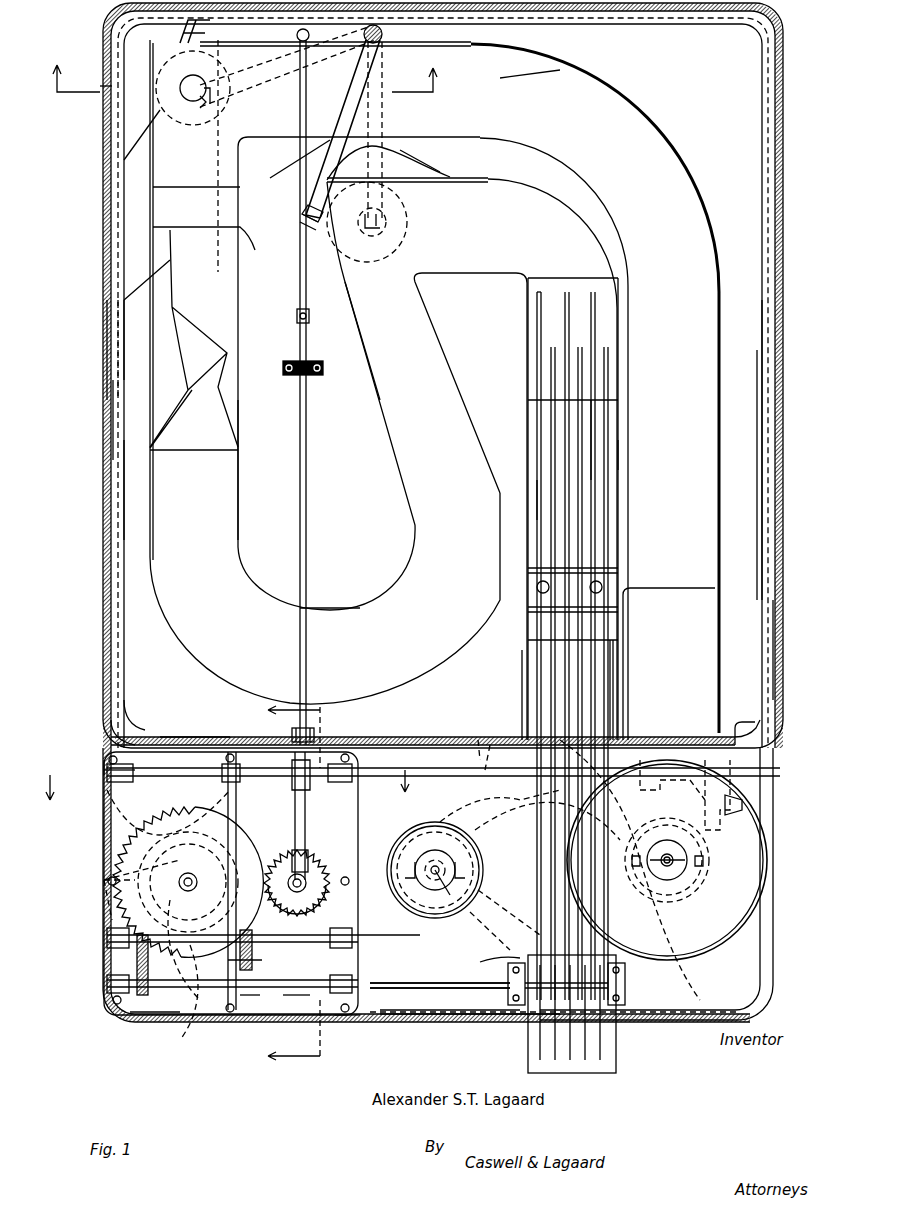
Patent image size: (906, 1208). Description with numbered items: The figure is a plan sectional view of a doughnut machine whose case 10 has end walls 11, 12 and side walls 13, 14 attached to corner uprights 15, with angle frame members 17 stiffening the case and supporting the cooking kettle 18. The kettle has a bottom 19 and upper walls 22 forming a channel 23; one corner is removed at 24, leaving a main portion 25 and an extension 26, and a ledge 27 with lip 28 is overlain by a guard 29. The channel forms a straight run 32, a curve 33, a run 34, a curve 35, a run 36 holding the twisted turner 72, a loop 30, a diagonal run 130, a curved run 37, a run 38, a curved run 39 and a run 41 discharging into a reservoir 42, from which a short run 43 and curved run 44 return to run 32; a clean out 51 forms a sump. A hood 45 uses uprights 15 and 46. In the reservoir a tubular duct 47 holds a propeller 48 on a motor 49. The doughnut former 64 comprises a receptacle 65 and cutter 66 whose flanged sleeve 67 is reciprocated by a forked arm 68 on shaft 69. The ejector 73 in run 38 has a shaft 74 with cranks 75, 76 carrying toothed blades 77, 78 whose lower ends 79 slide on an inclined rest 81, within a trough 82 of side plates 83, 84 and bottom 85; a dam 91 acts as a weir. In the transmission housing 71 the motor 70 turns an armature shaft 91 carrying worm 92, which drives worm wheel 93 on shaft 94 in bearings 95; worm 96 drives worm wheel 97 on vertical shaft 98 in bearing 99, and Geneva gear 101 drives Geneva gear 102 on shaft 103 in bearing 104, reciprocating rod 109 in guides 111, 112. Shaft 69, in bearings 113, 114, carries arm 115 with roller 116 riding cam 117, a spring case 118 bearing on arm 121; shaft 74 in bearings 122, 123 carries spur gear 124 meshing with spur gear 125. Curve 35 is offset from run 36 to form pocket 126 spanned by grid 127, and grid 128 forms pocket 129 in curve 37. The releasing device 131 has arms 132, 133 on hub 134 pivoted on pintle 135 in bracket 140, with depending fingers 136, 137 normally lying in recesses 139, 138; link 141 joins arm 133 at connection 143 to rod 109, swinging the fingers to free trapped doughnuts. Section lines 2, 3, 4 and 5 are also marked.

The uprights 15 is at (103, 28).
The end wall 11 is at (574, 24).
The uprights 46 is at (125, 720).
The side wall 13 is at (775, 432).
The main portion 25 is at (758, 495).
The side wall 14 is at (112, 418).
The case 10 is at (125, 485).
The ledge 27 is at (135, 334).
The lip 28 is at (118, 360).
The guard 29 is at (108, 385).
The end wall 12 is at (470, 1012).
The extension 26 is at (432, 1010).
The shaft 74 is at (400, 985).
The pintle 135 is at (383, 36).
The recess 139 is at (183, 34).
The depending finger 136 is at (163, 68).
The arm 132 is at (275, 50).
The bracket 140 is at (287, 77).
The section line 2 is at (198, 276).
The section line 3 is at (243, 64).
The curve 35 is at (100, 90).
The grid 127 is at (152, 77).
The pocket 126 is at (162, 120).
The straight run 36 is at (162, 172).
The arm 133 is at (345, 104).
The hub 134 is at (385, 55).
The reciprocating rod 109 is at (306, 448).
The connection 143 is at (296, 319).
The guide 112 is at (296, 376).
The link 141 is at (300, 103).
The releasing device 131 is at (287, 164).
The bottom 19 is at (208, 548).
The upper walls 22 is at (345, 522).
The channel 23 is at (338, 615).
The recess 138 is at (318, 225).
The grid 128 is at (420, 183).
The pocket 129 is at (393, 160).
The curved run 37 is at (407, 167).
The depending finger 137 is at (338, 255).
The curve 33 is at (670, 170).
The straight run 34 is at (560, 70).
The curved run 39 is at (557, 210).
The straight run 38 is at (477, 195).
The angle frame members 17 is at (600, 603).
The loop 30 is at (383, 613).
The diagonal run 130 is at (428, 352).
The cooking kettle 18 is at (150, 565).
The turner 72 is at (172, 320).
The straight run 41 is at (610, 287).
The inclined rest 81 is at (553, 290).
The toothed blades 78 is at (578, 375).
The lower ends 79 is at (538, 310).
The ejector 73 is at (600, 443).
The straight run 32 is at (685, 456).
The toothed blades 77 is at (538, 502).
The dam 91 is at (572, 595).
The trough 82 is at (527, 636).
The side plate 83 is at (522, 687).
The side plate 84 is at (618, 668).
The bottom 85 is at (610, 697).
The reservoir 42 is at (478, 740).
The clean out 51 is at (490, 745).
The hood 45 is at (770, 690).
The guide 111 is at (296, 728).
The removed corner 24 is at (180, 735).
The arm 121 is at (206, 755).
The section line 4 is at (286, 886).
The transmission housing 71 is at (96, 840).
The bearing 113 is at (105, 755).
The bearing 99 is at (103, 778).
The section line 5 is at (226, 796).
The shaft 69 is at (210, 775).
The worm wheel 97 is at (165, 812).
The vertical shaft 98 is at (190, 878).
The worm 92 is at (189, 882).
The Geneva gear 102 is at (268, 870).
The vertical shaft 103 is at (300, 880).
The arm 115 is at (296, 800).
The bearing 114 is at (348, 775).
The motor 70 is at (102, 880).
The Geneva gear 101 is at (105, 905).
The bearings 95 is at (105, 940).
The spur gear 125 is at (137, 965).
The bearing 122 is at (105, 984).
The roller 116 is at (258, 950).
The cam 117 is at (328, 925).
The worm 96 is at (195, 950).
The case 118 is at (226, 990).
The worm wheel 93 is at (250, 1000).
The shaft 94 is at (295, 1000).
The spur gear 124 is at (140, 1012).
The bearing 123 is at (345, 1020).
The bearing 104 is at (375, 935).
The propeller 48 is at (434, 882).
The motor 49 is at (450, 895).
The tubular duct 47 is at (445, 820).
The short run 43 is at (470, 925).
The crank 75 is at (492, 961).
The receptacle 65 is at (700, 950).
The doughnut former 64 is at (705, 900).
The flanged sleeve 67 is at (660, 900).
The cutter 66 is at (672, 840).
The forked arm 68 is at (706, 868).
The curved run 44 is at (660, 1010).
The crank 76 is at (530, 1030).